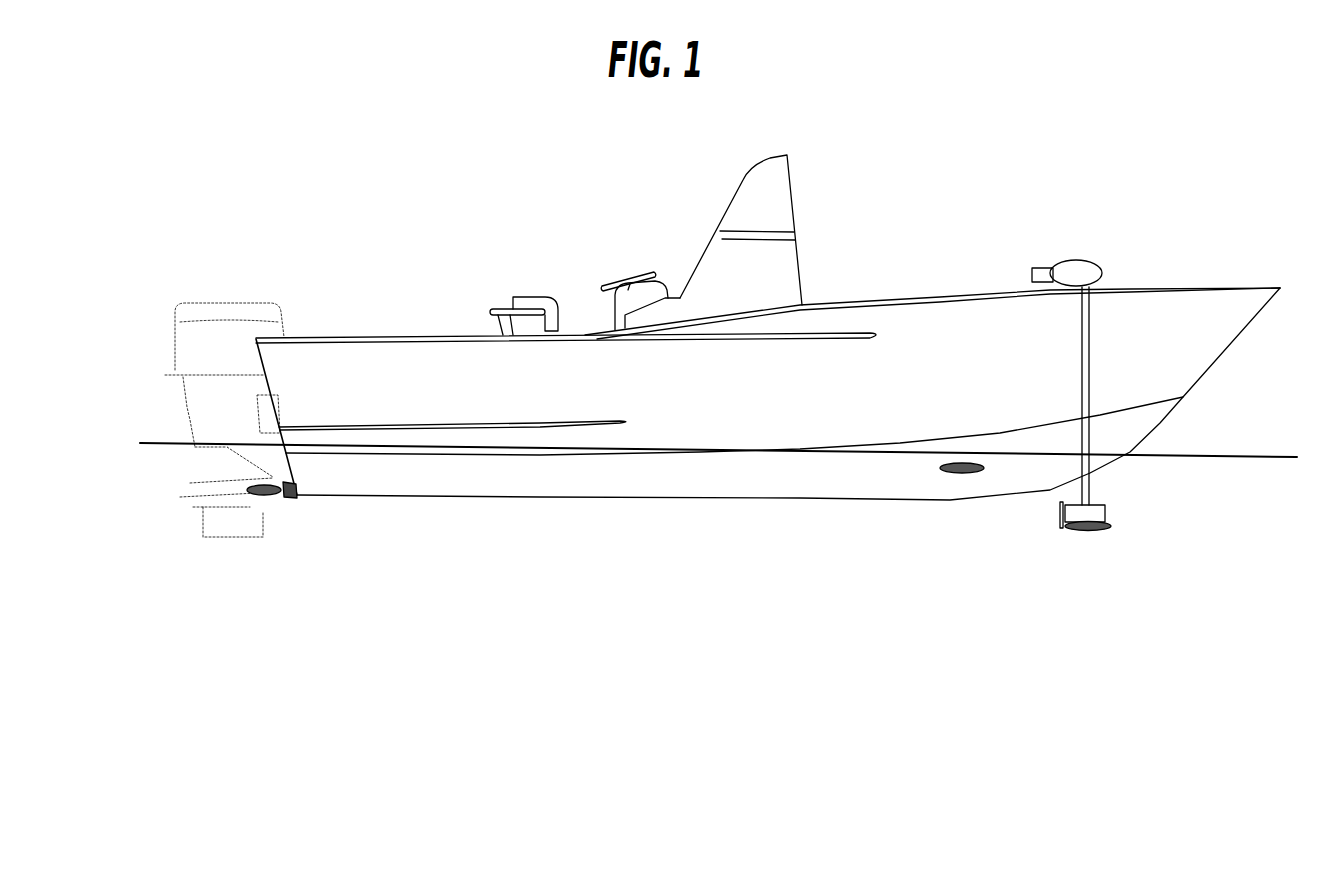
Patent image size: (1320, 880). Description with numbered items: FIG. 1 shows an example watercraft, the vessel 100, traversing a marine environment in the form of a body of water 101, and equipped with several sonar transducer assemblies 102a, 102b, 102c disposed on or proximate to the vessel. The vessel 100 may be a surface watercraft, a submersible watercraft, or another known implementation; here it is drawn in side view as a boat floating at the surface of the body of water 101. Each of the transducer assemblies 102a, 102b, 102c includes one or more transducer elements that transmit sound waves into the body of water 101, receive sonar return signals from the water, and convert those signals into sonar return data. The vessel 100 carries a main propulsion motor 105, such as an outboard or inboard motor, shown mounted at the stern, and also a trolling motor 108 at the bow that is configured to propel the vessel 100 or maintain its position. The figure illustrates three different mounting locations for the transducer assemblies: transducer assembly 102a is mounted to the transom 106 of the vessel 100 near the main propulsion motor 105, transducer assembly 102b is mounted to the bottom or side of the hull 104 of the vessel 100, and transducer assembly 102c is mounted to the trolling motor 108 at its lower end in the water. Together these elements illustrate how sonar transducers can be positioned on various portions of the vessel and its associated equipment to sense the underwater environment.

The vessel 100 is at (692, 373).
The body of water 101 is at (702, 594).
The sonar transducer assembly 102a is at (273, 490).
The sonar transducer assembly 102b is at (960, 478).
The sonar transducer assembly 102c is at (1090, 530).
The hull 104 is at (553, 487).
The main propulsion motor 105 is at (200, 303).
The transom 106 is at (265, 372).
The trolling motor 108 is at (1103, 513).